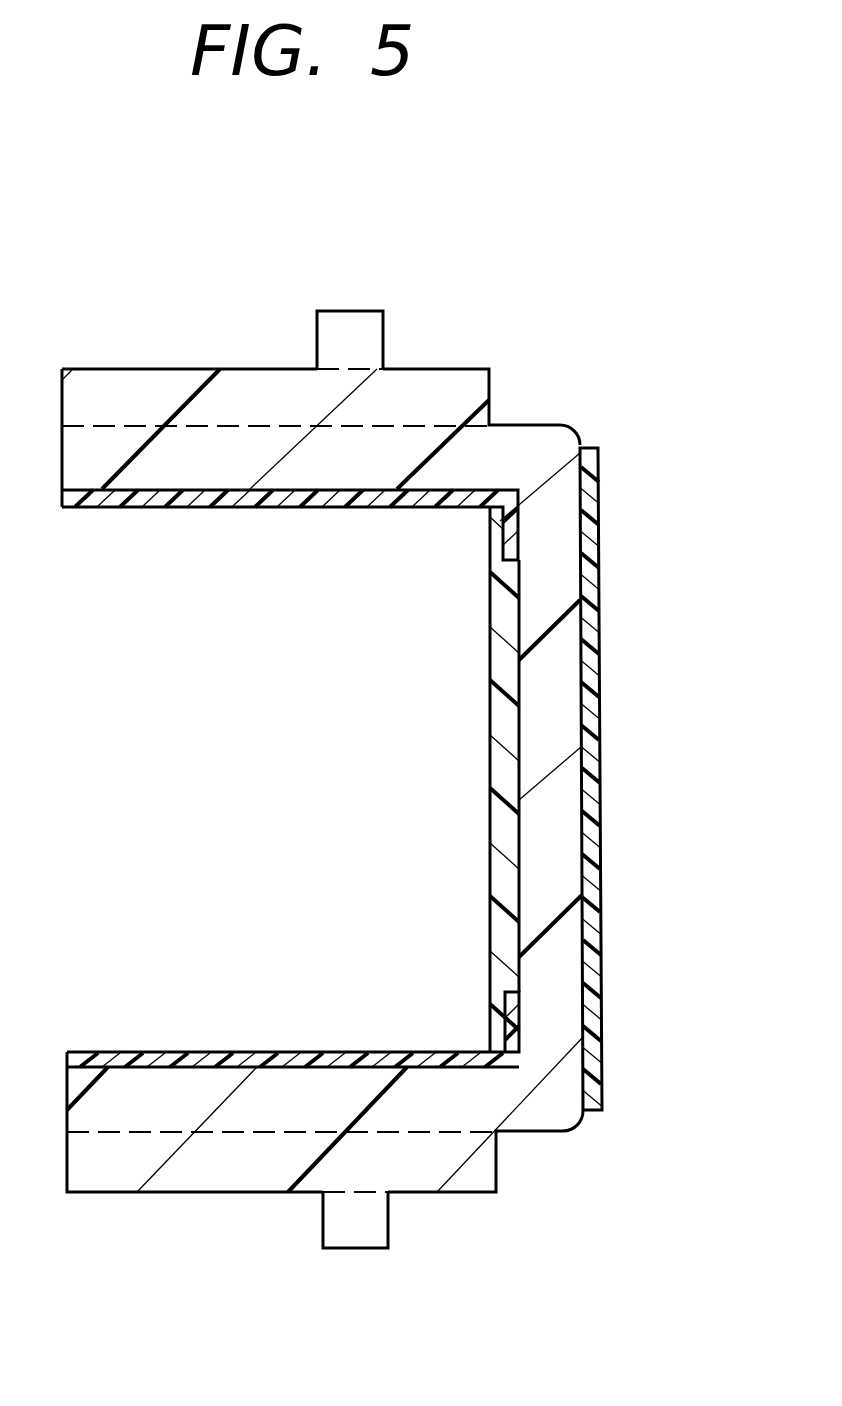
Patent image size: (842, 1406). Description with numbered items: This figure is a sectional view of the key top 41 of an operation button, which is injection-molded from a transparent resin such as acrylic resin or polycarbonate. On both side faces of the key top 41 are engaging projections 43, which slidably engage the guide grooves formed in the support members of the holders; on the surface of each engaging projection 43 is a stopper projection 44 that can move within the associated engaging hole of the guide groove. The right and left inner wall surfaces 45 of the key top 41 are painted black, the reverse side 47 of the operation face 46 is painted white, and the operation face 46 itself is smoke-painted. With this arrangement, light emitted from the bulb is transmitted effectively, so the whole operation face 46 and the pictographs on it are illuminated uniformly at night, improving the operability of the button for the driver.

The key top 41 is at (604, 352).
The engaging projection 43 is at (136, 395).
The stopper projection 44 is at (343, 332).
The inner wall surface 45 is at (136, 508).
The operation face 46 is at (600, 782).
The reverse side 47 is at (510, 828).